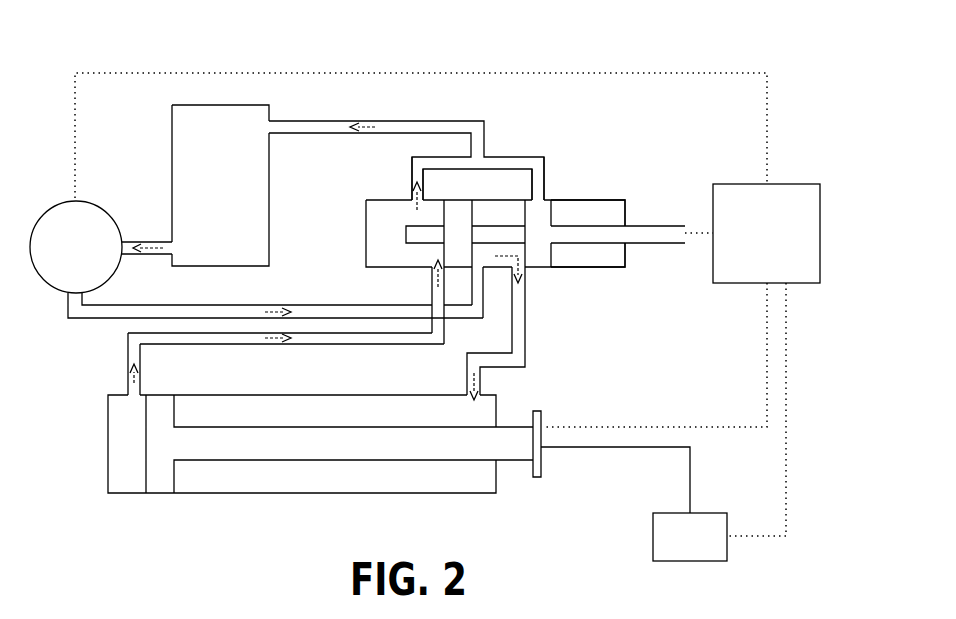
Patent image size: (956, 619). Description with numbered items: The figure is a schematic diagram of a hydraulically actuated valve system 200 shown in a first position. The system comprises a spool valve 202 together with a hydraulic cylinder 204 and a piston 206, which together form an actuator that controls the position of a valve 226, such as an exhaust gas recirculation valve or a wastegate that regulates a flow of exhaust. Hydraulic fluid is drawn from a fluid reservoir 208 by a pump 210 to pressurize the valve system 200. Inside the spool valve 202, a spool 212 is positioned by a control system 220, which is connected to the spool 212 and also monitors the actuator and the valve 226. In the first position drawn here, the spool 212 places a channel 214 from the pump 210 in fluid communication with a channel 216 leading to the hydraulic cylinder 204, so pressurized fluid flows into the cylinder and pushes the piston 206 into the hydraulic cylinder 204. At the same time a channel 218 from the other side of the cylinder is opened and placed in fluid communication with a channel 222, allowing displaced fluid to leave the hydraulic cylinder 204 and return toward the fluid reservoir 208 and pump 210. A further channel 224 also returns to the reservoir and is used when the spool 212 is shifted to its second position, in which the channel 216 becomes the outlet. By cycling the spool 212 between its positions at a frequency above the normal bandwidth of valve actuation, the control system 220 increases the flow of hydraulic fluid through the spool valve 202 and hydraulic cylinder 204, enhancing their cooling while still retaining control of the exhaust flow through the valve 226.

The hydraulically actuated valve system 200 is at (590, 30).
The spool valve 202 is at (594, 158).
The hydraulic cylinder 204 is at (270, 395).
The piston 206 is at (418, 454).
The fluid reservoir 208 is at (220, 185).
The pump 210 is at (256, 259).
The spool 212 is at (560, 243).
The channel 214 is at (484, 308).
The channel 216 is at (525, 329).
The channel 218 is at (430, 301).
The control system 220 is at (766, 233).
The channel 222 is at (411, 186).
The channel 224 is at (546, 190).
The valve 226 is at (690, 537).